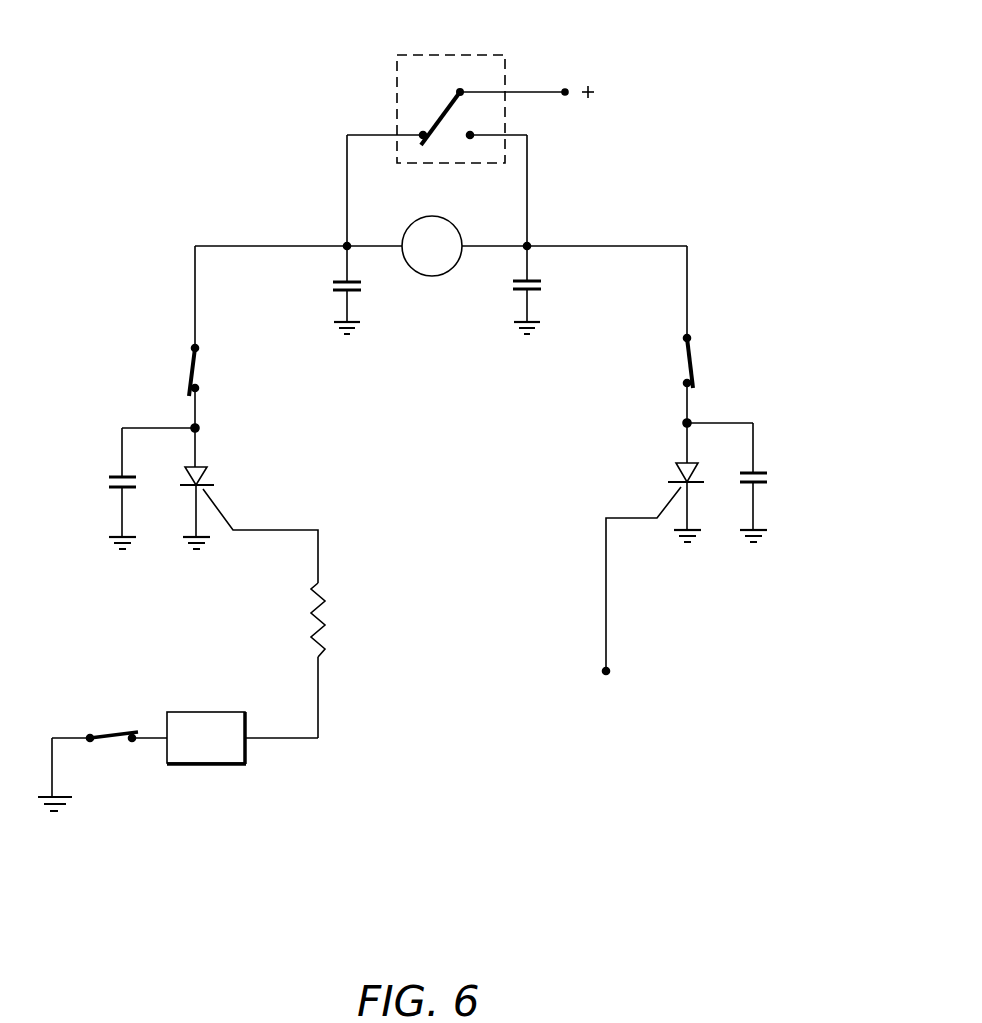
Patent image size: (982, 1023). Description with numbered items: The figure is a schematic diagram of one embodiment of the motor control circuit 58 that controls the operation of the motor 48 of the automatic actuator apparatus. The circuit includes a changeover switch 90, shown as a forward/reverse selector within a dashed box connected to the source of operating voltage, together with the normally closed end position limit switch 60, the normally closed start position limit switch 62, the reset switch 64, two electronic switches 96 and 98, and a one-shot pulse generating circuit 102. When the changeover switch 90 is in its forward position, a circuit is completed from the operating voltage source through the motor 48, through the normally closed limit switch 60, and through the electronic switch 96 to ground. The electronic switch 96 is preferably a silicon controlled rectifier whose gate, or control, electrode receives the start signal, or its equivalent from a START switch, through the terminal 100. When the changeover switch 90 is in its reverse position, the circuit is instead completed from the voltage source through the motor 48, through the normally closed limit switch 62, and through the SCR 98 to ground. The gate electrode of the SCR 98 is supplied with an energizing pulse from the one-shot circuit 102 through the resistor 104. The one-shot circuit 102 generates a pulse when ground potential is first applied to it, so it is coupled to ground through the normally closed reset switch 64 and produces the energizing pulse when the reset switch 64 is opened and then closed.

The changeover switch 90 is at (503, 63).
The motor 48 is at (437, 276).
The motor control circuit 58 is at (468, 453).
The start position limit switch 62 is at (192, 363).
The end position limit switch 60 is at (693, 358).
The silicon controlled rectifier 98 is at (210, 473).
The electronic switch 96 is at (673, 465).
The resistor 104 is at (322, 617).
The one-shot pulse generating circuit 102 is at (220, 767).
The reset switch 64 is at (118, 728).
The terminal 100 is at (610, 670).